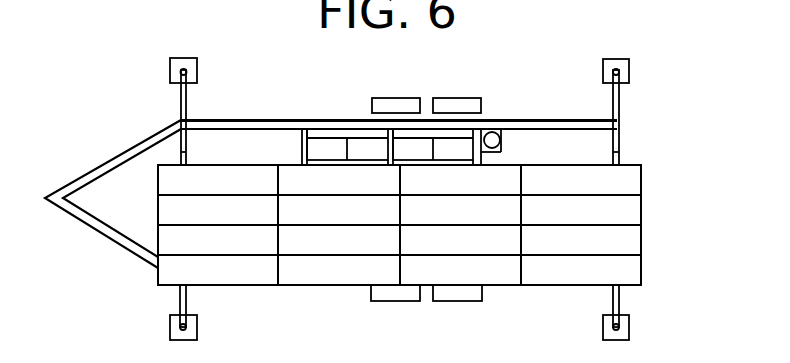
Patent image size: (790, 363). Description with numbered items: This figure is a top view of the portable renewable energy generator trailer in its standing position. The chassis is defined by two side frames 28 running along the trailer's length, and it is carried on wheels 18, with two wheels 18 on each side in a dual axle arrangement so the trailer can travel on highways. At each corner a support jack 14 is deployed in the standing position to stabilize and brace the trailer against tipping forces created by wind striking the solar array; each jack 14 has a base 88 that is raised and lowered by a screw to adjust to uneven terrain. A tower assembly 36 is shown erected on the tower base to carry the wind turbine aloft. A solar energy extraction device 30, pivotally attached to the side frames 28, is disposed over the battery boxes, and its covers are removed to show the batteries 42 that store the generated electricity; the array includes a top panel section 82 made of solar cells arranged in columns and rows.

The support jack 14 is at (632, 72).
The wheels 18 is at (457, 302).
The side frame 28 is at (540, 117).
The solar energy extraction device 30 is at (628, 210).
The tower assembly 36 is at (490, 131).
The batteries 42 is at (367, 145).
The top panel section 82 is at (641, 166).
The base 88 is at (168, 321).